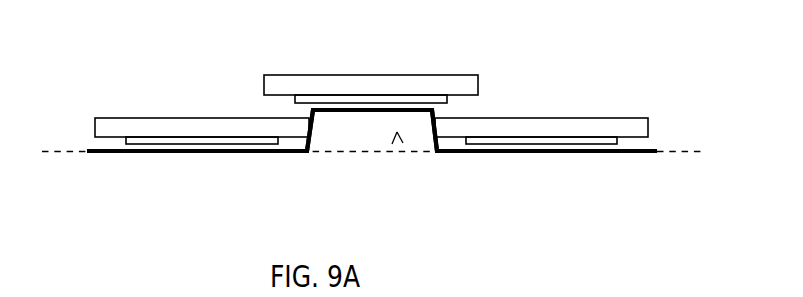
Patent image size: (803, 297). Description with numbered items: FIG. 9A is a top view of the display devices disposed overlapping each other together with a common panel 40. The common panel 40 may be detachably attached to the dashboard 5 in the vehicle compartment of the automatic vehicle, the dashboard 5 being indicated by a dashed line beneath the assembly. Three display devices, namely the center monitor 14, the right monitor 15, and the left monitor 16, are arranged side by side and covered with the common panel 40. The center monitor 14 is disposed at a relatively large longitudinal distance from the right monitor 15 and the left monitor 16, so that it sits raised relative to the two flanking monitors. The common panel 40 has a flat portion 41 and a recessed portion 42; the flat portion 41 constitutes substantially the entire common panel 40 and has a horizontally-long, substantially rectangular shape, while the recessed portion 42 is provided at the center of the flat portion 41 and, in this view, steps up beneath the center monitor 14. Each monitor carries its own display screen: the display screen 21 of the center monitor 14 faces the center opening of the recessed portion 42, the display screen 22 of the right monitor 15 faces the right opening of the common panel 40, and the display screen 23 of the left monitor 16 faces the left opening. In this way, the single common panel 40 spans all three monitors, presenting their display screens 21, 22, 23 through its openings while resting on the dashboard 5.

The dashboard 5 is at (57, 153).
The center monitor 14 is at (382, 75).
The right monitor 15 is at (573, 127).
The left monitor 16 is at (187, 128).
The display screen 21 is at (373, 104).
The display screen 22 is at (575, 153).
The display screen 23 is at (165, 150).
The common panel 40 is at (372, 130).
The flat portion 41 is at (632, 153).
The recessed portion 42 is at (397, 132).